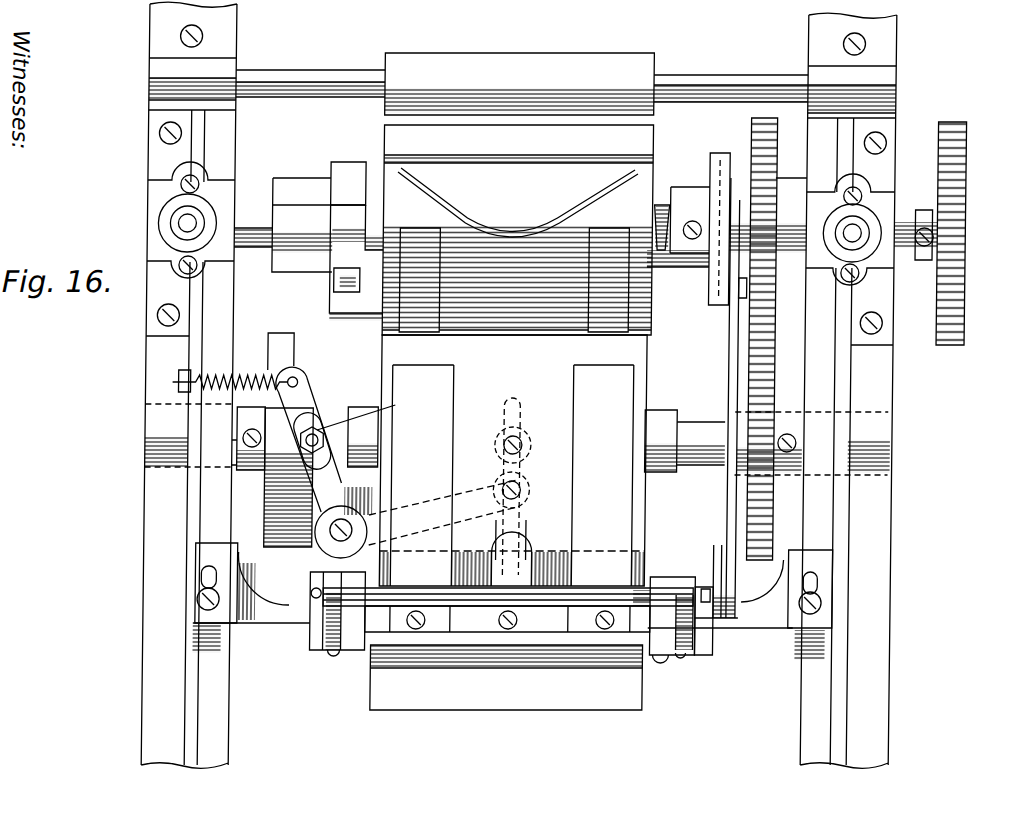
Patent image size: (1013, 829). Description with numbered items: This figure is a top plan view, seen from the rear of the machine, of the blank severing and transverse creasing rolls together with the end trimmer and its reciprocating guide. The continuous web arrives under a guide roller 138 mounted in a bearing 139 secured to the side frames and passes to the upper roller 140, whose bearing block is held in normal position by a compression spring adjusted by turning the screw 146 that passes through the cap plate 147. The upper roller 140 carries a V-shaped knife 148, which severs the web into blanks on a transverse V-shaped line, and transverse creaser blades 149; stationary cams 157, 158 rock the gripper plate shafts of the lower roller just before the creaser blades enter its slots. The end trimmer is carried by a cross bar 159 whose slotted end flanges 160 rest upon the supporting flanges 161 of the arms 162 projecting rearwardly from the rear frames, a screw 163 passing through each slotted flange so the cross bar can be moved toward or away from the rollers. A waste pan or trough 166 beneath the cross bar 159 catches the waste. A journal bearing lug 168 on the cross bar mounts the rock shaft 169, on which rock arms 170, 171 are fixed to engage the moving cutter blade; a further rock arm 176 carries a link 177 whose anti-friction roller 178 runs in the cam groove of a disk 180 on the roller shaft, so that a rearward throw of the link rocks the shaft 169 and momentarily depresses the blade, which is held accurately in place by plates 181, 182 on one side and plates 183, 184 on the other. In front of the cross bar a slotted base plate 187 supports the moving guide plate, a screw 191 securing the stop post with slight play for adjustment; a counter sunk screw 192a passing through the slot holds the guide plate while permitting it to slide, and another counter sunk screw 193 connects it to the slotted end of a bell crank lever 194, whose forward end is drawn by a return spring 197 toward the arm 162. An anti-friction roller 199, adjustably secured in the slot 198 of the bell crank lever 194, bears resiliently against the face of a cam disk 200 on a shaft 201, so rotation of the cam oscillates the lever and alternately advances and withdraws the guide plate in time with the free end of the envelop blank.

The guide roller 138 is at (480, 66).
The bearing 139 is at (228, 34).
The upper roller 140 is at (640, 128).
The screw 146 is at (178, 212).
The cap plate 147 is at (150, 237).
The V-shaped knife 148 is at (495, 226).
The transverse creaser blades 149 is at (502, 175).
The stationary cam 157 is at (298, 178).
The stationary cam 158 is at (352, 172).
The cross bar 159 is at (286, 606).
The slotted end flanges 160 is at (232, 560).
The supporting flanges 161 is at (236, 696).
The arms 162 is at (150, 497).
The screw 163 is at (203, 598).
The waste pan or trough 166 is at (590, 690).
The journal bearing lug 168 is at (665, 596).
The rock shaft 169 is at (585, 586).
The rock arm 170 is at (322, 650).
The rock arm 171 is at (736, 654).
The rock arm 176 is at (718, 580).
The link 177 is at (737, 354).
The anti-friction roller 178 is at (742, 290).
The disk 180 is at (722, 156).
The plate 181 is at (345, 656).
The plate 182 is at (320, 636).
The plate 183 is at (690, 655).
The plate 184 is at (722, 630).
The slotted base plate 187 is at (508, 610).
The screw 191 is at (386, 356).
The counter sunk screw 192a is at (510, 435).
The counter sunk screw 193 is at (522, 486).
The bell crank lever 194 is at (385, 470).
The return spring 197 is at (252, 372).
The slot 198 is at (313, 407).
The anti-friction roller 199 is at (388, 426).
The cam disk 200 is at (233, 340).
The shaft 201 is at (240, 468).